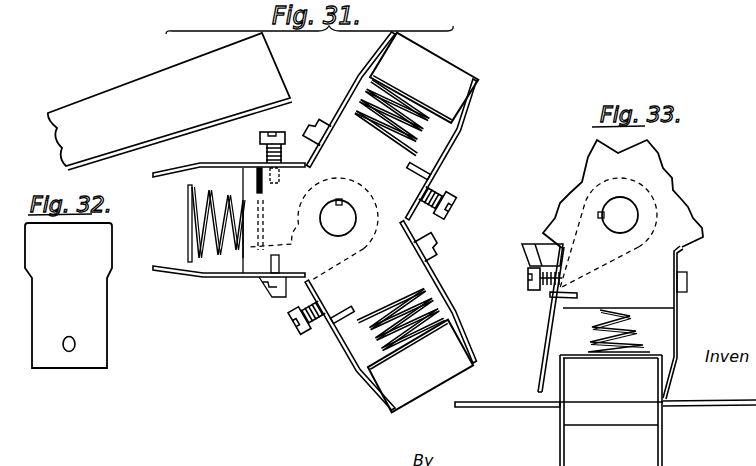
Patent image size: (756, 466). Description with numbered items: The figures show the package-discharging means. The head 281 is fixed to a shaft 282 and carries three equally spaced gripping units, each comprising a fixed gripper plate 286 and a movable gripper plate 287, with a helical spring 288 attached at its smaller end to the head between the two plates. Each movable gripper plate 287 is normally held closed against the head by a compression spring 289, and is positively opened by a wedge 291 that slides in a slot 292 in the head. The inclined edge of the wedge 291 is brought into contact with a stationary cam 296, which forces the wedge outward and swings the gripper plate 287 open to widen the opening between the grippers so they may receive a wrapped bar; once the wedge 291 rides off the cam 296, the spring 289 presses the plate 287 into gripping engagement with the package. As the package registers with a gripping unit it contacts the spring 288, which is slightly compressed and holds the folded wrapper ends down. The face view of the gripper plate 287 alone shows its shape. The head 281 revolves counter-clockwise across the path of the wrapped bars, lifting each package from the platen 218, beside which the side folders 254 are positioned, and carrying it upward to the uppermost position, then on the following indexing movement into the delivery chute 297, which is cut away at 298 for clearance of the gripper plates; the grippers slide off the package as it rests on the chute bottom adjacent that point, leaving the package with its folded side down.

In FIG. 31, the delivery chute 297 is at (208, 62).
In FIG. 31, the cut-away portion of delivery chute 298 is at (221, 114).
In FIG. 31, the movable gripper plate 287 is at (221, 162).
In FIG. 32, the movable gripper plate 287 is at (68, 295).
In FIG. 33, the movable gripper plate 287 is at (541, 340).
In FIG. 31, the compression spring 289 is at (258, 143).
In FIG. 33, the compression spring 289 is at (545, 244).
In FIG. 31, the wedge 291 is at (255, 172).
In FIG. 33, the wedge 291 is at (566, 304).
In FIG. 31, the slot 292 is at (262, 222).
In FIG. 31, the helical spring 288 is at (190, 225).
In FIG. 31, the fixed gripper plate 286 is at (205, 282).
In FIG. 31, the shaft 282 is at (345, 228).
In FIG. 33, the shaft 282 is at (622, 203).
In FIG. 33, the head 281 is at (650, 163).
In FIG. 33, the stationary cam 296 is at (525, 258).
In FIG. 33, the platen 218 is at (611, 410).
In FIG. 33, the side folders 254 is at (558, 416).